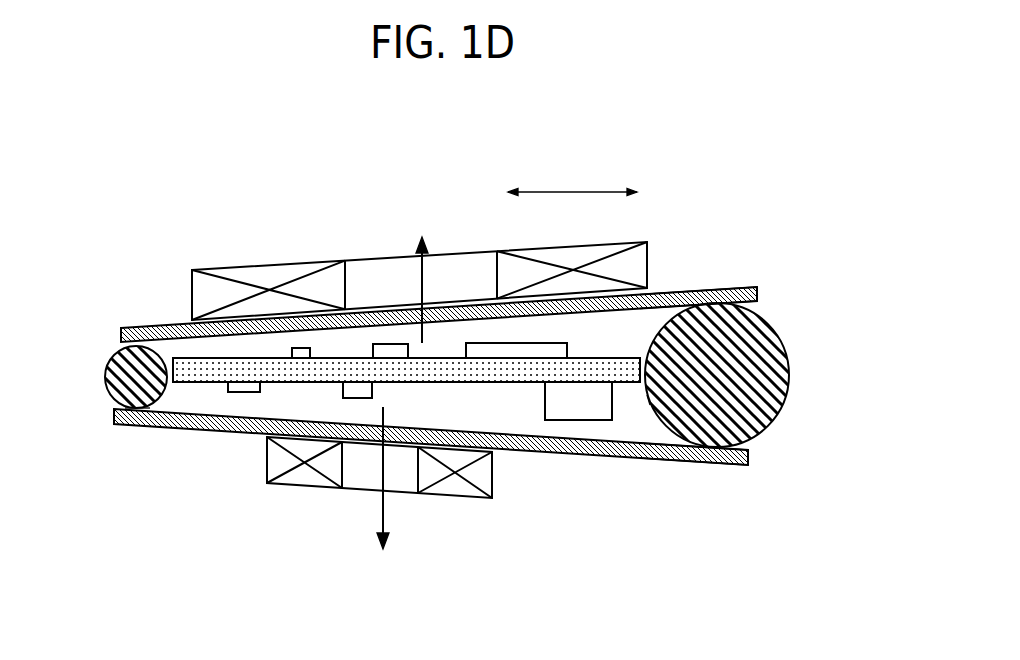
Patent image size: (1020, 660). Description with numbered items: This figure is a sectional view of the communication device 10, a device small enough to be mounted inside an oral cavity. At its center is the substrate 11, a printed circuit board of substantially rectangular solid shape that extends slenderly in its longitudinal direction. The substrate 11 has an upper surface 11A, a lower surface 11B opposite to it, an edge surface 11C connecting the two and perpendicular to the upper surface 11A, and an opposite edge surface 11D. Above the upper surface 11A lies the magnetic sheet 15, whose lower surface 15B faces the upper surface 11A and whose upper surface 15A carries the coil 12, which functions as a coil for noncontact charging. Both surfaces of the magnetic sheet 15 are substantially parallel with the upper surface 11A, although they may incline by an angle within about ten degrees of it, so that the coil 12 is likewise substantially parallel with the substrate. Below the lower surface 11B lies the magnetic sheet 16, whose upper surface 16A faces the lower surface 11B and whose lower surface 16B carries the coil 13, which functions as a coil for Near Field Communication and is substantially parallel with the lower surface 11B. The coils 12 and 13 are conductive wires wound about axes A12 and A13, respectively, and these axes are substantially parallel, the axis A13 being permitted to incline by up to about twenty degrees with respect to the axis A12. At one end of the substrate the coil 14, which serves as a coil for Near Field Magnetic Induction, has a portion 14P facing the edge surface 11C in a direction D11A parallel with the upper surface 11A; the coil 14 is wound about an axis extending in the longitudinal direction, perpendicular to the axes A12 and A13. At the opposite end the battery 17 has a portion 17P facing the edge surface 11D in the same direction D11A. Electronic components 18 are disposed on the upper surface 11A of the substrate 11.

The communication device 10 is at (240, 168).
The substrate 11 is at (443, 373).
The upper surface 11A is at (218, 358).
The lower surface 11B is at (210, 383).
The edge surface 11C is at (173, 373).
The edge surface 11D is at (641, 370).
The coil 12 is at (636, 243).
The coil 13 is at (280, 467).
The coil 14 is at (118, 395).
The portion 14P is at (142, 419).
The magnetic sheet 15 is at (758, 292).
The upper surface 15A is at (717, 284).
The lower surface 15B is at (745, 323).
The magnetic sheet 16 is at (748, 462).
The upper surface 16A is at (720, 437).
The lower surface 16B is at (721, 464).
The battery 17 is at (762, 410).
The portion 17P is at (645, 386).
The electronic components 18 is at (510, 353).
The axis A12 is at (418, 274).
The axis A13 is at (373, 495).
The direction D11A is at (573, 190).